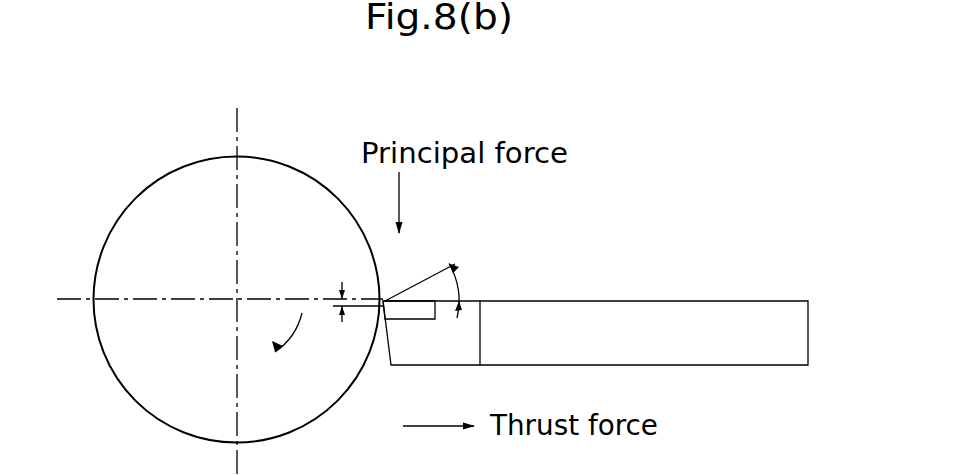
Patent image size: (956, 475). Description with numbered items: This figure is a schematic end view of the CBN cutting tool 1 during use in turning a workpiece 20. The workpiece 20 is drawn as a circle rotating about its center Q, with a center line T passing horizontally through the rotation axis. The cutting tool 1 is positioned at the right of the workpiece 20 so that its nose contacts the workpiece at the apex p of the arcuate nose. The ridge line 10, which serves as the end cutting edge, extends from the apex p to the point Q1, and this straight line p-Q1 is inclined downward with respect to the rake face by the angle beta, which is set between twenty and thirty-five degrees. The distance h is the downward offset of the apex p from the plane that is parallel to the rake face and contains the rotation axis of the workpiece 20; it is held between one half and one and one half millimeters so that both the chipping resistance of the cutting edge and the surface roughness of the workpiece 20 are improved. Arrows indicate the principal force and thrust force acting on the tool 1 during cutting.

The cutting tool 1 is at (562, 318).
The ridge line 10 is at (384, 300).
The workpiece 20 is at (152, 210).
The rotation center of workpiece Q is at (236, 299).
The point Q1 is at (392, 297).
The apex P of the nose p is at (393, 302).
The distance h is at (336, 298).
The center line T is at (40, 299).